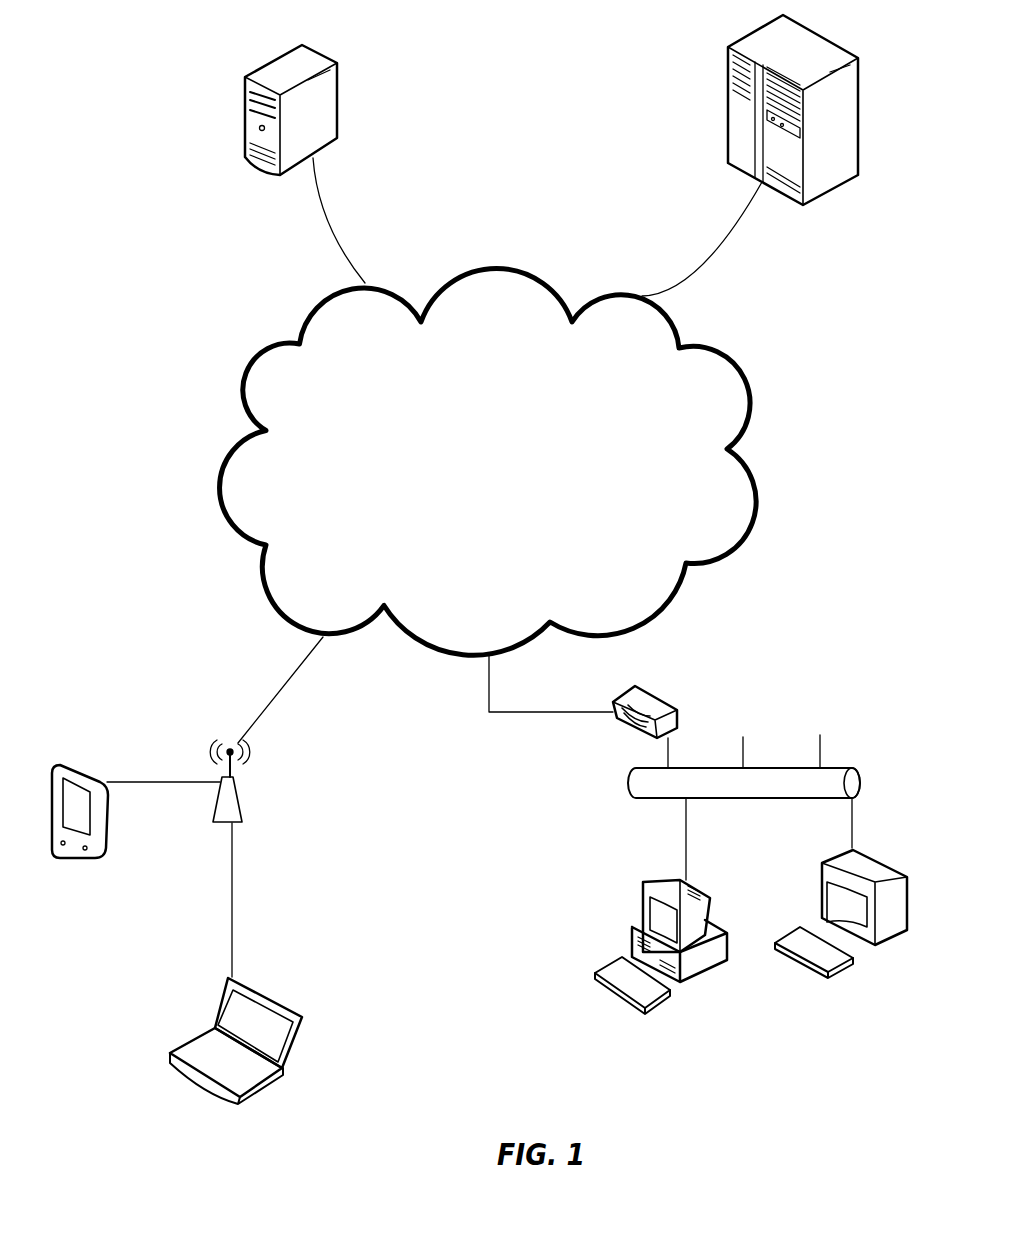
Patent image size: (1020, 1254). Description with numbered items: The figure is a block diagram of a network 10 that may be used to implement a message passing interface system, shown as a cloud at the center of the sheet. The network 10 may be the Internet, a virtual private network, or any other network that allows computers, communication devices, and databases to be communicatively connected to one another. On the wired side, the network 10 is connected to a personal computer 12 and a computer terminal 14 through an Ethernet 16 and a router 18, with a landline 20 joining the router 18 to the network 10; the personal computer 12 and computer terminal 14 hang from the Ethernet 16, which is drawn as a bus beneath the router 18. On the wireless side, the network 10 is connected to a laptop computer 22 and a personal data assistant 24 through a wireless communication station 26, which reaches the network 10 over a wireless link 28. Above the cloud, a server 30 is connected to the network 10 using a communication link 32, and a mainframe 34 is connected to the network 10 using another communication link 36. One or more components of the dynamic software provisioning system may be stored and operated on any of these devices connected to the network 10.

The network 10 is at (180, 348).
The personal computer 12 is at (637, 927).
The computer terminal 14 is at (890, 867).
The Ethernet 16 is at (848, 765).
The router 18 is at (677, 711).
The landline 20 is at (530, 713).
The laptop computer 22 is at (255, 1093).
The personal data assistant 24 is at (82, 767).
The wireless communication station 26 is at (240, 812).
The wireless link 28 is at (275, 697).
The server 30 is at (337, 108).
The communication link 32 is at (343, 260).
The mainframe 34 is at (817, 202).
The communication link 36 is at (730, 242).